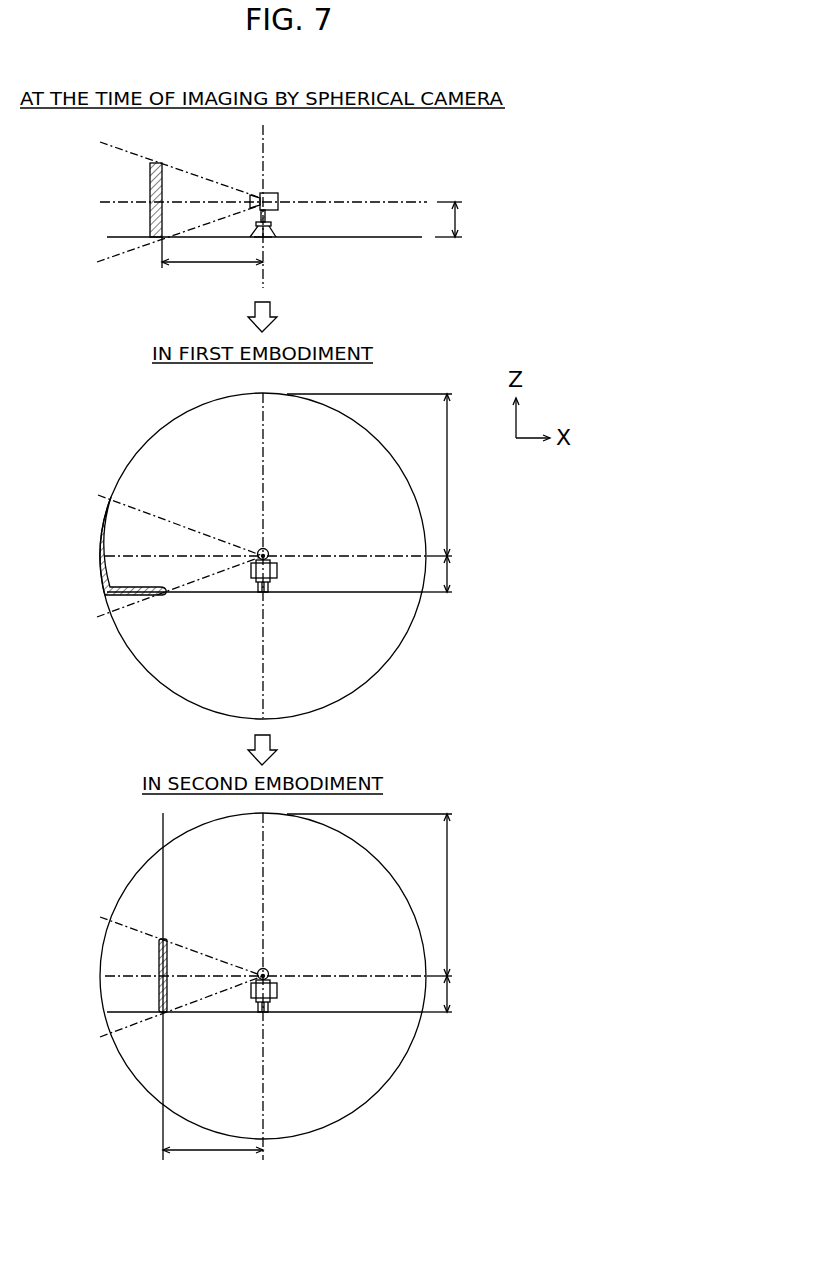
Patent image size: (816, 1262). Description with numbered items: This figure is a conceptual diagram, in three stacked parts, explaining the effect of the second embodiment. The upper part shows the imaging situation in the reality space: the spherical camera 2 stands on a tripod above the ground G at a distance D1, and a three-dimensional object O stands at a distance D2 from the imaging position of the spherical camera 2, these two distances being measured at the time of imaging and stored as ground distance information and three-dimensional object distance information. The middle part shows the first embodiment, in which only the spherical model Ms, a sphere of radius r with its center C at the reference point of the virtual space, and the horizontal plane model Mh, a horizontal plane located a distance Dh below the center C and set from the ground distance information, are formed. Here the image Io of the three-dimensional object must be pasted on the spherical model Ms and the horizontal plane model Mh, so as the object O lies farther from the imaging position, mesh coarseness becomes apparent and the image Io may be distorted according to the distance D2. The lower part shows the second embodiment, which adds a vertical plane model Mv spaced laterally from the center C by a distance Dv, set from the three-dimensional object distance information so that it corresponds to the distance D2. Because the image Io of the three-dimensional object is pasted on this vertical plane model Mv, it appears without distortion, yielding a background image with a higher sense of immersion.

The three-dimensional object O is at (149, 186).
The spherical camera 2 is at (272, 191).
The ground G is at (347, 238).
The distance to the ground D1 is at (466, 219).
The distance to the three-dimensional object D2 is at (212, 263).
The spherical model Ms is at (128, 458).
The image of the three-dimensional object Io is at (102, 530).
The center C is at (270, 553).
The horizontal plane model Mh is at (342, 588).
The radius r is at (378, 685).
The distance from the center to the horizontal plane model Dh is at (458, 784).
The vertical plane model Mv is at (165, 910).
The distance from the center to the vertical plane model Dv is at (213, 1165).